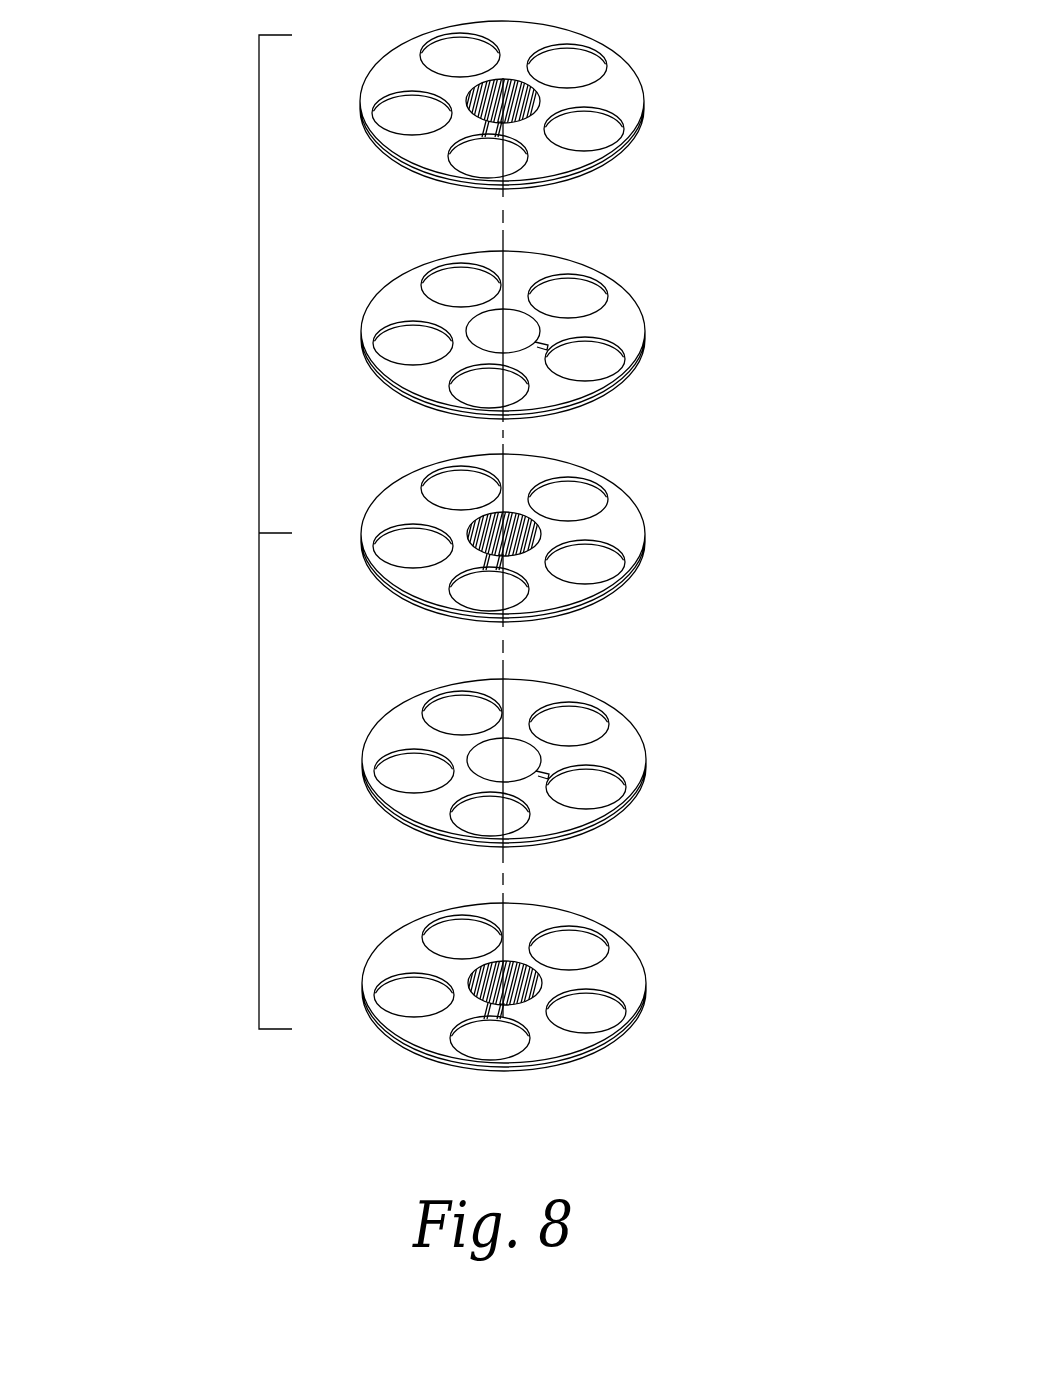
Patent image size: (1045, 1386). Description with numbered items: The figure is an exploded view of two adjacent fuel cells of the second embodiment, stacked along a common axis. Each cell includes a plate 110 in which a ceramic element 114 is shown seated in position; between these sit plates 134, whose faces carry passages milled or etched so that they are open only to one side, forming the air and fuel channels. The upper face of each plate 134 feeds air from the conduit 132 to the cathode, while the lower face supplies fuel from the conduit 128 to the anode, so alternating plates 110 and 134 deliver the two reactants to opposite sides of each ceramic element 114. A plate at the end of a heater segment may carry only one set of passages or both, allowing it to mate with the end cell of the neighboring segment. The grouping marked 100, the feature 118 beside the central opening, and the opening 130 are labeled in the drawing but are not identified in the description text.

The stack assembly 100 is at (259, 278).
The plate 110 is at (643, 365).
The ceramic element 114 is at (483, 336).
The notch 118 is at (548, 343).
The conduit 128 is at (580, 70).
The aperture 130 is at (607, 358).
The conduit 132 is at (480, 158).
The plate 134 is at (634, 144).